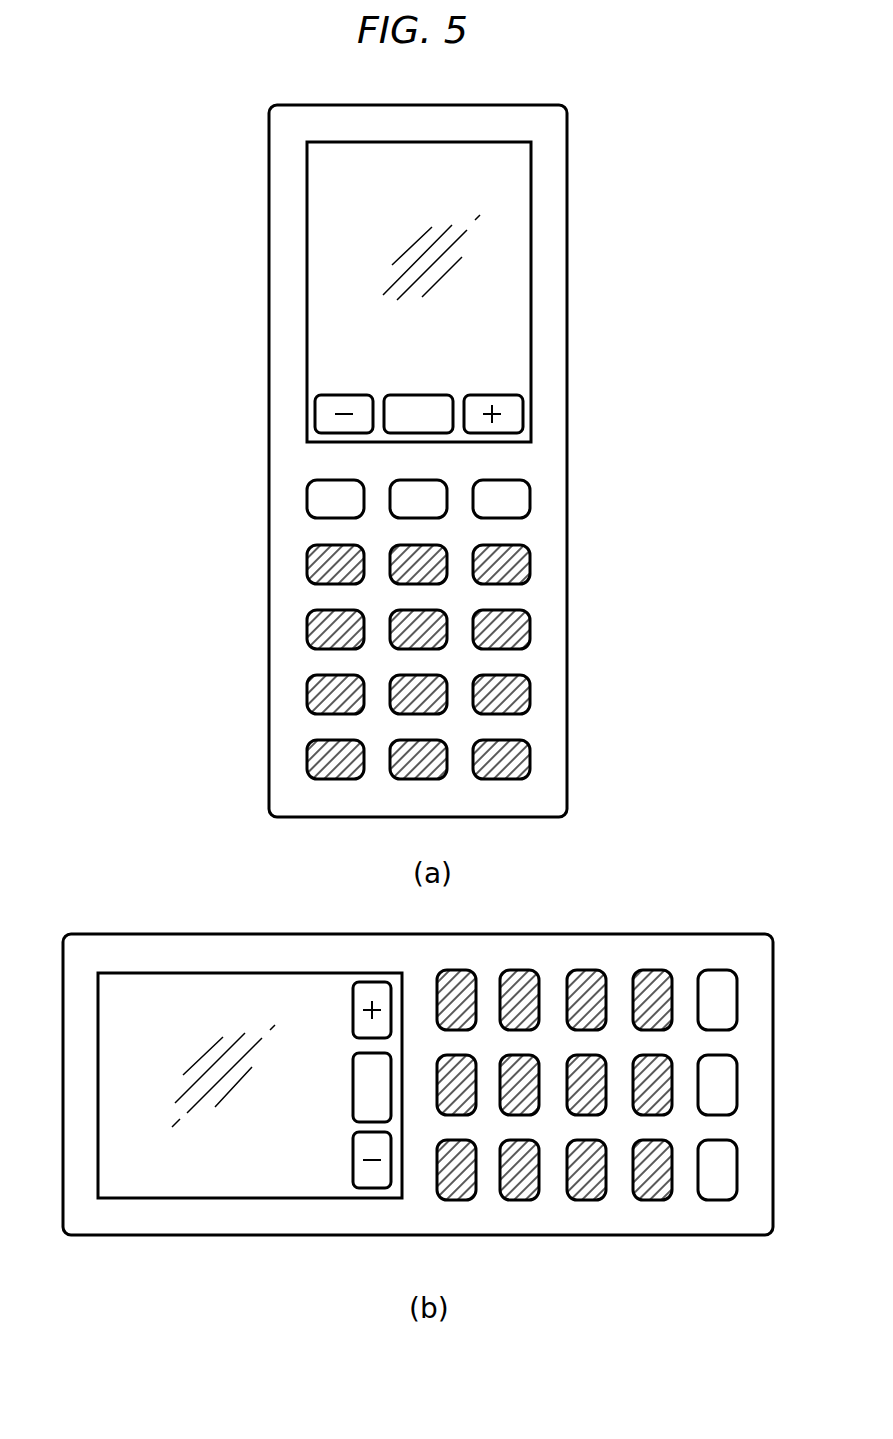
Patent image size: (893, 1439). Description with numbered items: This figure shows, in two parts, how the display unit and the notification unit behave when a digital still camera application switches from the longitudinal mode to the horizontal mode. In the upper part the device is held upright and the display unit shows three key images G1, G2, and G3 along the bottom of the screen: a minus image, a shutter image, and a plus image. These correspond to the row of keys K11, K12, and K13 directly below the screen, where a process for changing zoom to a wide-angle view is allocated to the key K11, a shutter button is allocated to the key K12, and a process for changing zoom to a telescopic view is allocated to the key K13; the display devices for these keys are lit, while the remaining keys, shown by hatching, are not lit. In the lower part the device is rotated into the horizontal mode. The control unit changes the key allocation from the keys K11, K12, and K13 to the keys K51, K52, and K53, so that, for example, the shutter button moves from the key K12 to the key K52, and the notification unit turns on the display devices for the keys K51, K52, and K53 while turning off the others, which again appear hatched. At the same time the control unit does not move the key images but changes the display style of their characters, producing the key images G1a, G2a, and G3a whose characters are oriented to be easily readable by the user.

The key image G1 is at (340, 395).
The key image G2 is at (412, 395).
The key image G3 is at (487, 395).
The key K11 is at (317, 497).
The key K12 is at (430, 483).
The key K13 is at (517, 500).
The key image G1a is at (353, 1162).
The key image G2a is at (353, 1090).
The key image G3a is at (353, 1027).
The key K51 is at (738, 1175).
The key K52 is at (738, 1090).
The key K53 is at (738, 1005).